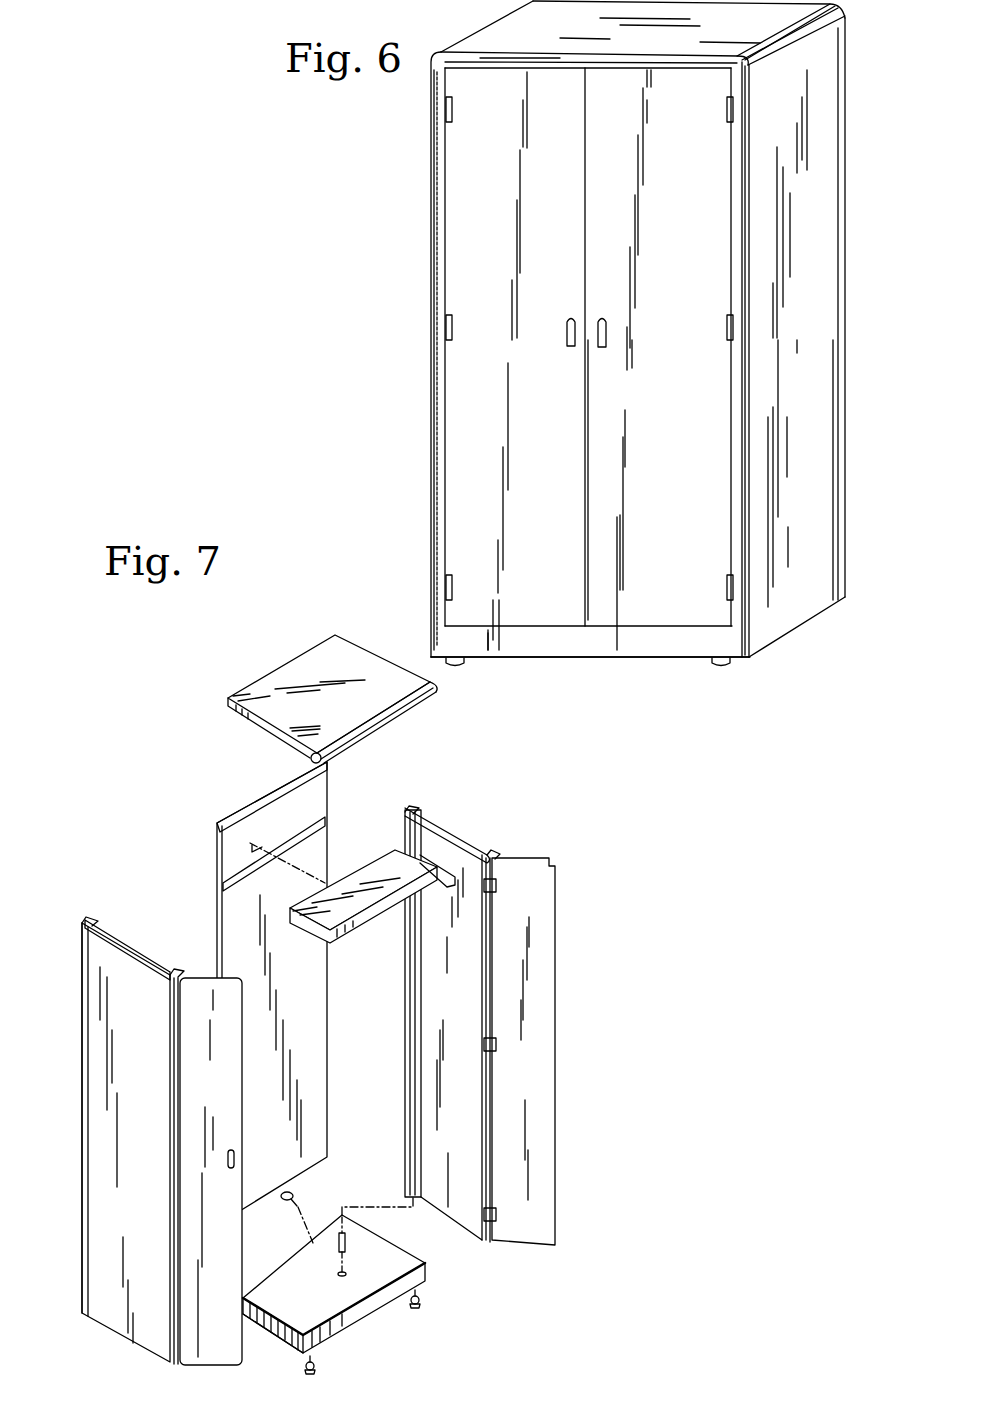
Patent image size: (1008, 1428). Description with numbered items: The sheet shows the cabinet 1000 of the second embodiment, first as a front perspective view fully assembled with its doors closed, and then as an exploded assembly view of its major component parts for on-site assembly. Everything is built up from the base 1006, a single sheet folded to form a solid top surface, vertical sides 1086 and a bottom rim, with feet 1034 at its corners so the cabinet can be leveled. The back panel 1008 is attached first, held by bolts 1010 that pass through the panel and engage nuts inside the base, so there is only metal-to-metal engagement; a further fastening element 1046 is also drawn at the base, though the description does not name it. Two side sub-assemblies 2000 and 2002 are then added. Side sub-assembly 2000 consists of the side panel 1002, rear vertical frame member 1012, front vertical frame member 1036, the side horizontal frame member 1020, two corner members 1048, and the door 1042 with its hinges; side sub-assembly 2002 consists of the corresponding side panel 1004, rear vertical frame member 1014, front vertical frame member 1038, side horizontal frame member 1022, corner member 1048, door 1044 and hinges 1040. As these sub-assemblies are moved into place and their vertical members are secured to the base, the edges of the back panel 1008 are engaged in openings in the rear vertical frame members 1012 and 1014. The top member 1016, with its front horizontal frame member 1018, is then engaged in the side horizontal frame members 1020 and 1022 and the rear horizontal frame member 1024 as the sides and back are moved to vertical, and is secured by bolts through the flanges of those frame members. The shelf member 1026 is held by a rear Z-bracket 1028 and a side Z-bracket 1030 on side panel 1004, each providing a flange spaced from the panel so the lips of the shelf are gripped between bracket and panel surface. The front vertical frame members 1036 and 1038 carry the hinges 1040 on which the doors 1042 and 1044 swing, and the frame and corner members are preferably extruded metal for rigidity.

In FIG. 6, the cabinet 1000 is at (408, 292).
In FIG. 7, the side panel 1002 is at (98, 1075).
In FIG. 6, the side panel 1004 is at (813, 118).
In FIG. 7, the side panel 1004 is at (478, 999).
In FIG. 6, the base 1006 is at (584, 646).
In FIG. 7, the base 1006 is at (355, 1315).
In FIG. 7, the back panel 1008 is at (215, 897).
In FIG. 7, the bolts 1010 is at (300, 1193).
In FIG. 7, the rear vertical frame member 1012 is at (80, 985).
In FIG. 7, the rear vertical frame member 1014 is at (405, 982).
In FIG. 6, the top member 1016 is at (593, 31).
In FIG. 7, the top member 1016 is at (275, 668).
In FIG. 7, the front horizontal frame member 1018 is at (405, 705).
In FIG. 7, the side horizontal frame member 1020 is at (135, 948).
In FIG. 6, the side horizontal frame member 1022 is at (810, 25).
In FIG. 7, the side horizontal frame member 1022 is at (443, 825).
In FIG. 7, the rear horizontal frame member 1024 is at (242, 803).
In FIG. 7, the shelf member 1026 is at (370, 862).
In FIG. 7, the rear Z-bracket 1028 is at (235, 870).
In FIG. 7, the side Z-bracket 1030 is at (437, 868).
In FIG. 6, the feet 1034 is at (462, 665).
In FIG. 7, the feet 1034 is at (424, 1303).
In FIG. 6, the front vertical frame member 1036 is at (432, 155).
In FIG. 7, the front vertical frame member 1036 is at (170, 1205).
In FIG. 6, the front vertical frame member 1038 is at (735, 402).
In FIG. 7, the front vertical frame member 1038 is at (497, 1135).
In FIG. 6, the hinges 1040 is at (726, 110).
In FIG. 7, the hinges 1040 is at (500, 1043).
In FIG. 6, the door 1042 is at (502, 219).
In FIG. 7, the door 1042 is at (236, 1074).
In FIG. 6, the door 1044 is at (704, 219).
In FIG. 7, the door 1044 is at (552, 993).
In FIG. 7, the locating pin 1046 is at (345, 1272).
In FIG. 7, the corner member 1048 is at (85, 920).
In FIG. 7, the vertical sides 1086 is at (280, 1337).
In FIG. 7, the side sub-assembly 2000 is at (62, 1271).
In FIG. 7, the side sub-assembly 2002 is at (575, 924).